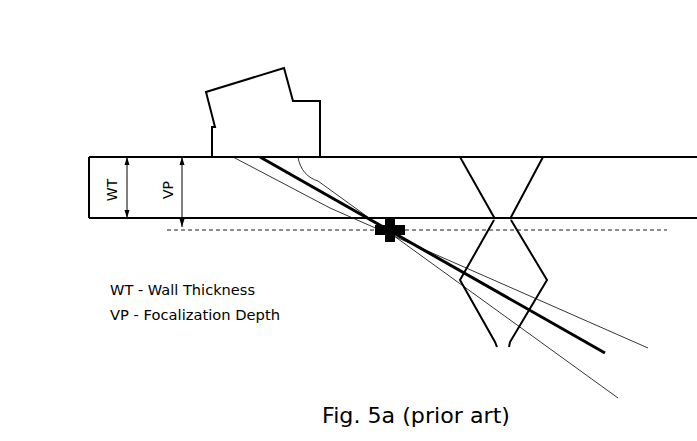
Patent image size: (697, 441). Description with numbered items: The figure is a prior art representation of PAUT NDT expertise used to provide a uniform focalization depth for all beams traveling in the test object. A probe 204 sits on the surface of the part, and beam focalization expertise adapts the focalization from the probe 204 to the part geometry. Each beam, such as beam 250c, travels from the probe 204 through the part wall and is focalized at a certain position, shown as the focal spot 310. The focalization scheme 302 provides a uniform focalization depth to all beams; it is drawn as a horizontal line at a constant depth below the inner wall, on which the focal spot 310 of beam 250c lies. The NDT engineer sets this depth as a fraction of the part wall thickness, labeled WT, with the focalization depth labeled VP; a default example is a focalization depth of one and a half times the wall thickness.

The probe 204 is at (243, 110).
The beam 250c is at (375, 230).
The focal spot 310 is at (385, 241).
The focalization scheme 302 is at (573, 230).